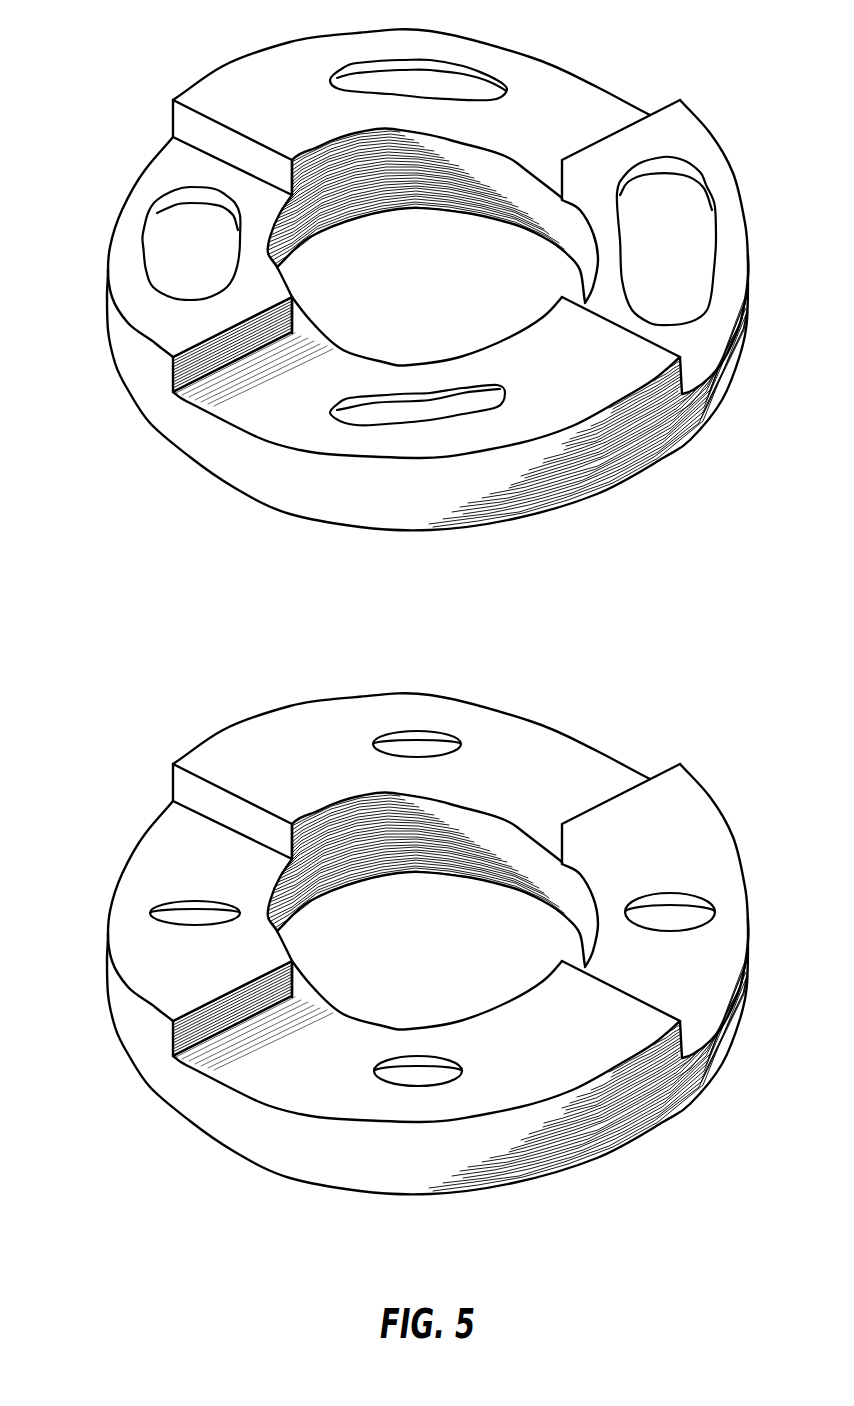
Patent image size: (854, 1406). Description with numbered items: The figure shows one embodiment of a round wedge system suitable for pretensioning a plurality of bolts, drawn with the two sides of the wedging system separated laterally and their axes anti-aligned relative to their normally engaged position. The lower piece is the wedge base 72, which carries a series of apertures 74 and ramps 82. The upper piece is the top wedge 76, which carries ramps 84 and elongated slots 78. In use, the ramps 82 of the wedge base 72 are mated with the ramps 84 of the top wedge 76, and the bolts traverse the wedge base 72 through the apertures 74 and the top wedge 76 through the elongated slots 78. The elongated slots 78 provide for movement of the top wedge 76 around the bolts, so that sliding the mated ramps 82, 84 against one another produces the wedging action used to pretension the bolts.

The wedge base 72 is at (384, 943).
The apertures 74 is at (374, 708).
The top wedge 76 is at (210, 82).
The elongated slots 78 is at (357, 63).
The ramps 82 is at (194, 809).
The ramps 84 is at (193, 123).